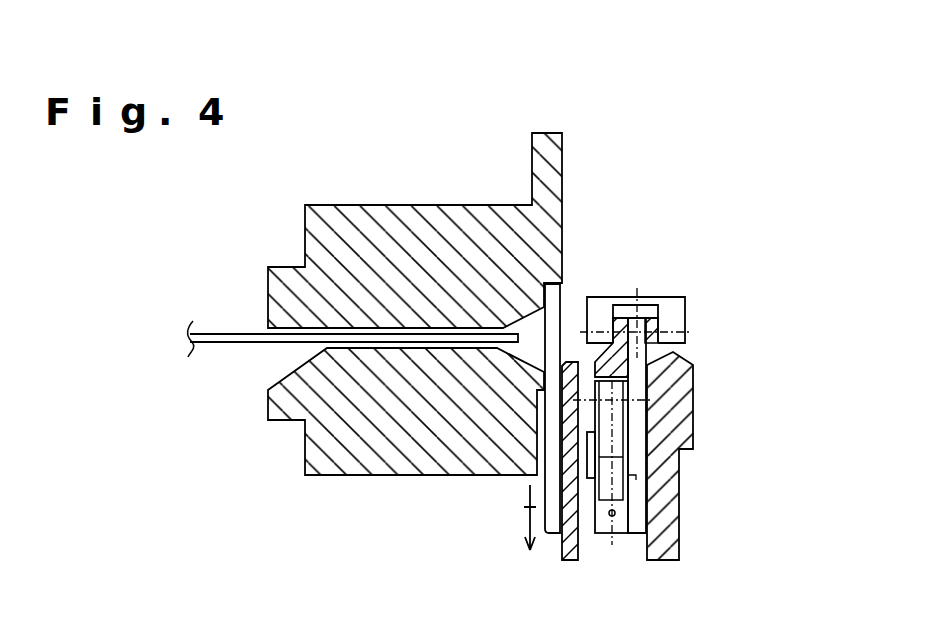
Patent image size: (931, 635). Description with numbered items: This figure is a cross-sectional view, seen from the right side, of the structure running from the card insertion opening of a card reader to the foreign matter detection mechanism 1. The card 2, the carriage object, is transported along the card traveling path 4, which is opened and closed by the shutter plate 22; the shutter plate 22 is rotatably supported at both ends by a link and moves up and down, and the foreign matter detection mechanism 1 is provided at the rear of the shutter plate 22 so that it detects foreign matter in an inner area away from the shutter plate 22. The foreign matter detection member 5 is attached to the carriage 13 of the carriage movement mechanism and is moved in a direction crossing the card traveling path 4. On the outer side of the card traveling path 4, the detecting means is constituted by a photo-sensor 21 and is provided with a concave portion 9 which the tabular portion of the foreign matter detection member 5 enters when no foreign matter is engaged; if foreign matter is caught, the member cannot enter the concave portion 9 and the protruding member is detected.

The foreign matter detection mechanism 1 is at (688, 187).
The card 2 is at (217, 343).
The card traveling path 4 is at (282, 318).
The foreign matter detection member 5 is at (633, 480).
The concave portion 9 is at (596, 357).
The carriage 13 is at (603, 532).
The photo-sensor 21 is at (680, 302).
The shutter plate 22 is at (550, 532).